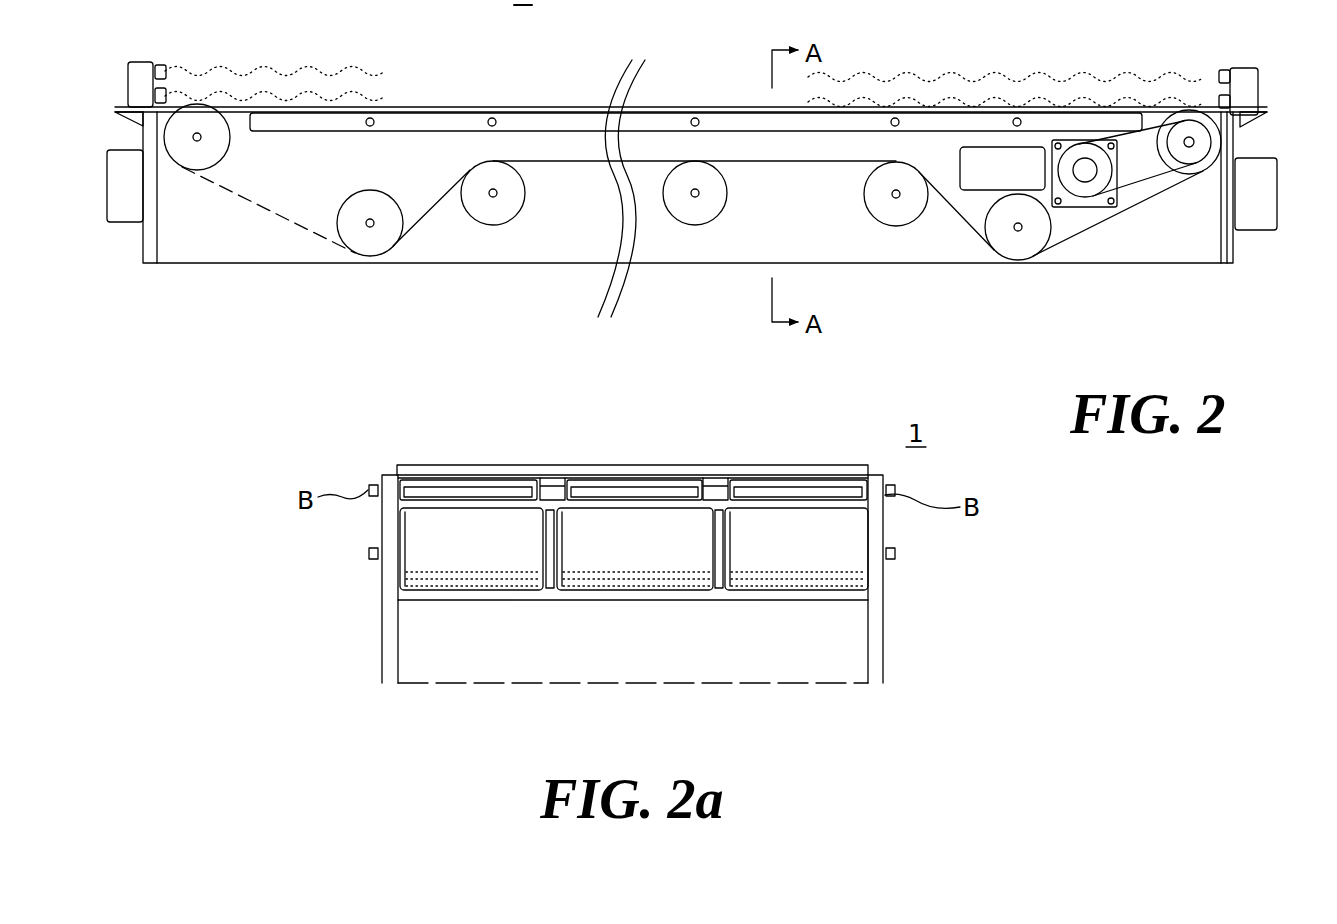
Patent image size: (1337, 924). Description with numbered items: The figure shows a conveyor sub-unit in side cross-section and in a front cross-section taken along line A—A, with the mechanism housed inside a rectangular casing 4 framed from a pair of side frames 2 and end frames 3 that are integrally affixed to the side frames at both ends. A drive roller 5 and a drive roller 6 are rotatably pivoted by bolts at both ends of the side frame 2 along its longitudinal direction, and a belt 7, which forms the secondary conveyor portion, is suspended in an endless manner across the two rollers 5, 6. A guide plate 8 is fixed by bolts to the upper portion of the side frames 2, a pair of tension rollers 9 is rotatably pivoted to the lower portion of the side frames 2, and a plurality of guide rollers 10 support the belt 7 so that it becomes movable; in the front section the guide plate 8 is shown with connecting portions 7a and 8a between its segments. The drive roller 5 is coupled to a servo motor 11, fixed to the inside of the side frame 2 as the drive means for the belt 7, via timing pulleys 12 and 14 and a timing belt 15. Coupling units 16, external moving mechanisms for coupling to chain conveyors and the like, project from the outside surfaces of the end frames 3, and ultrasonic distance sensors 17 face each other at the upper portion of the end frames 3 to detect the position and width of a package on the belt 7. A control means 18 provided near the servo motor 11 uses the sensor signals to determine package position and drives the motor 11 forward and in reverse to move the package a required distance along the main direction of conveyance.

In FIG. 2, the side frame 2 is at (945, 256).
In FIG. 2a, the side frame 2 is at (382, 629).
In FIG. 2, the end frame 3 is at (152, 240).
In FIG. 2a, the end frame 3 is at (800, 650).
In FIG. 2, the casing 4 is at (437, 249).
In FIG. 2a, the casing 4 is at (448, 648).
In FIG. 2, the drive roller 5 is at (1212, 170).
In FIG. 2, the drive roller 6 is at (205, 155).
In FIG. 2, the belt 7 is at (573, 106).
In FIG. 2a, the belt 7 is at (650, 465).
In FIG. 2a, the rail connector 7a is at (553, 480).
In FIG. 2, the guide plate 8 is at (467, 106).
In FIG. 2a, the guide plate 8 is at (470, 480).
In FIG. 2a, the rail clip 8a is at (541, 510).
In FIG. 2, the tension roller 9 is at (363, 258).
In FIG. 2, the guide roller 10 is at (508, 208).
In FIG. 2a, the guide roller 10 is at (657, 555).
In FIG. 2, the servo motor 11 is at (1085, 207).
In FIG. 2, the timing pulley 12 is at (1085, 150).
In FIG. 2, the timing pulley 14 is at (1190, 118).
In FIG. 2, the timing belt 15 is at (1157, 170).
In FIG. 2, the coupling unit 16 is at (123, 208).
In FIG. 2, the ultrasonic distance sensor 17 is at (127, 74).
In FIG. 2, the control means 18 is at (975, 160).